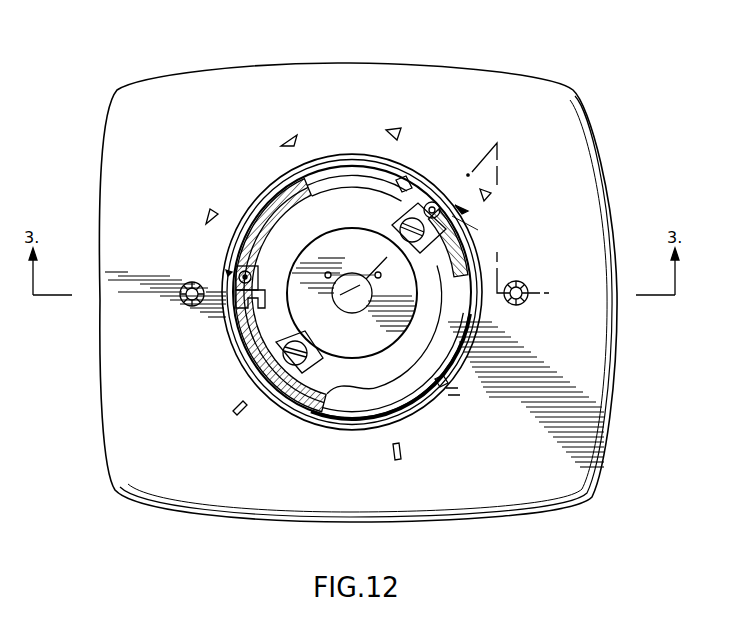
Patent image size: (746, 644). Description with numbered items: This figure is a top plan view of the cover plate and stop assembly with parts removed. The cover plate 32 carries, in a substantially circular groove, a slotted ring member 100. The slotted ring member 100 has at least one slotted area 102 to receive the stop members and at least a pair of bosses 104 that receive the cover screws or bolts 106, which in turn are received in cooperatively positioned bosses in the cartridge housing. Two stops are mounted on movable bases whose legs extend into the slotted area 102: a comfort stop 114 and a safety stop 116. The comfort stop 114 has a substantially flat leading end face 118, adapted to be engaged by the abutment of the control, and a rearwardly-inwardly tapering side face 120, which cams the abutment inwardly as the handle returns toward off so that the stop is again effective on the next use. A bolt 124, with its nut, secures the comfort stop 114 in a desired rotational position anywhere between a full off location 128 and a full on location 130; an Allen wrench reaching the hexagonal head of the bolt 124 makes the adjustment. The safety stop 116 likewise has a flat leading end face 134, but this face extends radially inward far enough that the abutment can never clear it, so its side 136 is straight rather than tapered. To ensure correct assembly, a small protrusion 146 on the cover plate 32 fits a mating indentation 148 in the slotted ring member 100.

The cover plate 32 is at (100, 396).
The slotted ring member 100 is at (473, 331).
The slotted area 102 is at (292, 204).
The bosses 104 is at (412, 258).
The cover screws or bolts 106 is at (400, 221).
The comfort stop 114 is at (466, 216).
The safety stop 116 is at (228, 273).
The flat leading end face 118 is at (437, 204).
The rearwardly-inwardly tapering side face 120 is at (404, 182).
The bolt 124 is at (468, 211).
The full off location 128 is at (402, 452).
The full on location 130 is at (234, 408).
The flat leading end face 134 is at (258, 290).
The side 136 is at (266, 298).
The small protrusion 146 is at (468, 393).
The mating indentation 148 is at (440, 380).